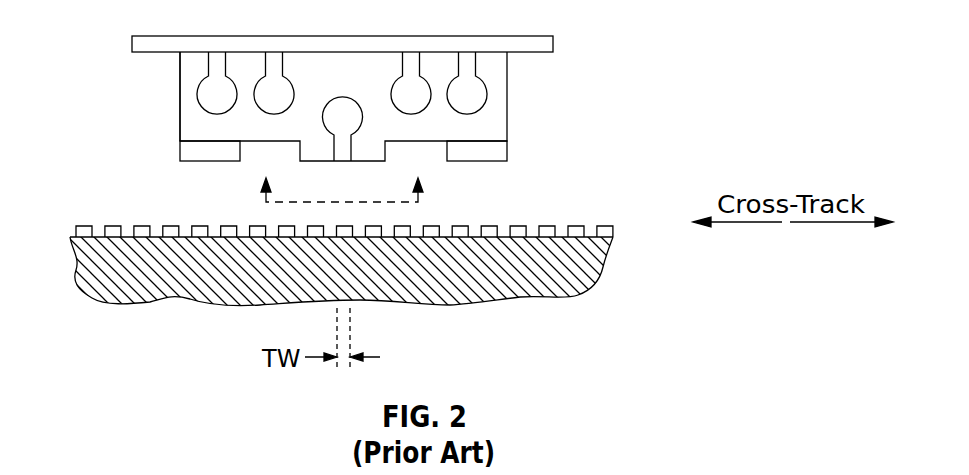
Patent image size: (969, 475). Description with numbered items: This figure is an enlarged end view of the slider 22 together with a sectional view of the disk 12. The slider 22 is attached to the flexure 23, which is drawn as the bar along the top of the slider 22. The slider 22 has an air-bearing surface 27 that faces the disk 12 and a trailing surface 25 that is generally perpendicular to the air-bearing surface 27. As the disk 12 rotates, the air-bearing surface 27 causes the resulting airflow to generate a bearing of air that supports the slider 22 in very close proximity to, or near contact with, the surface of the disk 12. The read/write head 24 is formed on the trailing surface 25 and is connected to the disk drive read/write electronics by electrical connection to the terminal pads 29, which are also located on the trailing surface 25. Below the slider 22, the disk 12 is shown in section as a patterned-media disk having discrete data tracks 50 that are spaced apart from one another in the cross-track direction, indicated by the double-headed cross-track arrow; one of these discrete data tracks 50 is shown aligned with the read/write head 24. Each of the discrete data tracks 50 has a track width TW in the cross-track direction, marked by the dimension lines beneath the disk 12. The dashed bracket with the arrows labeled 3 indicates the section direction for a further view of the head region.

The disk 12 is at (605, 262).
The slider 22 is at (508, 128).
The flexure 23 is at (539, 39).
The read/write head 24 is at (341, 99).
The trailing surface 25 is at (195, 127).
The air-bearing surface 27 is at (210, 162).
The terminal pads 29 is at (257, 95).
The section line 3- 3 is at (342, 176).
The discrete data tracks 50 is at (110, 226).